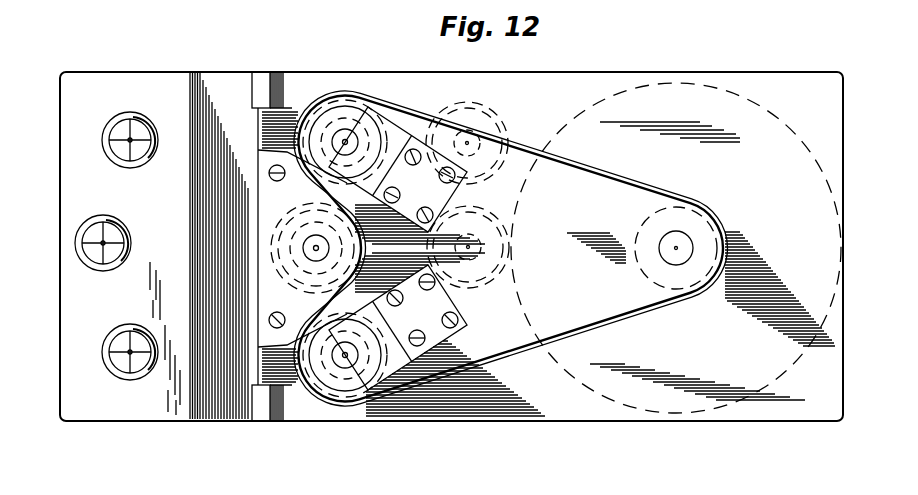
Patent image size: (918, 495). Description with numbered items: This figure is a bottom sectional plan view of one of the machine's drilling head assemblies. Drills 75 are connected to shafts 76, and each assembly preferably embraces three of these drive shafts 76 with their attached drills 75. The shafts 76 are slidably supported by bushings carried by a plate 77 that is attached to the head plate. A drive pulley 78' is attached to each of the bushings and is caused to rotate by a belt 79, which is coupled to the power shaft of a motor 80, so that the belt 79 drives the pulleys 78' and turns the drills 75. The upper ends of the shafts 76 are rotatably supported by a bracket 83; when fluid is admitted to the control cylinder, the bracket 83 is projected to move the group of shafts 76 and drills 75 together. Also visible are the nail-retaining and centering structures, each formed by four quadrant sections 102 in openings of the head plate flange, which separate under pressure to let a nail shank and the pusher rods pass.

The plate 77 is at (555, 80).
The quadrant sections 102 is at (114, 233).
The belt 79 is at (621, 182).
The shafts 76 is at (350, 137).
The drive pulley 78' is at (326, 245).
The drills 75 is at (316, 250).
The bracket 83 is at (433, 104).
The motor 80 is at (712, 413).